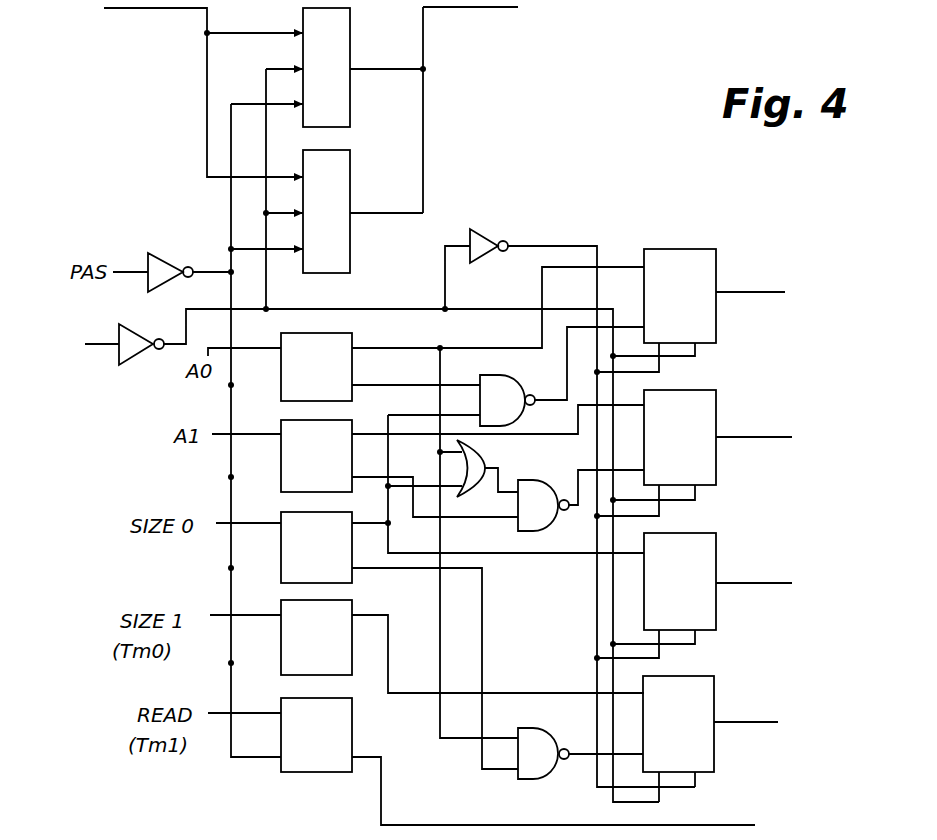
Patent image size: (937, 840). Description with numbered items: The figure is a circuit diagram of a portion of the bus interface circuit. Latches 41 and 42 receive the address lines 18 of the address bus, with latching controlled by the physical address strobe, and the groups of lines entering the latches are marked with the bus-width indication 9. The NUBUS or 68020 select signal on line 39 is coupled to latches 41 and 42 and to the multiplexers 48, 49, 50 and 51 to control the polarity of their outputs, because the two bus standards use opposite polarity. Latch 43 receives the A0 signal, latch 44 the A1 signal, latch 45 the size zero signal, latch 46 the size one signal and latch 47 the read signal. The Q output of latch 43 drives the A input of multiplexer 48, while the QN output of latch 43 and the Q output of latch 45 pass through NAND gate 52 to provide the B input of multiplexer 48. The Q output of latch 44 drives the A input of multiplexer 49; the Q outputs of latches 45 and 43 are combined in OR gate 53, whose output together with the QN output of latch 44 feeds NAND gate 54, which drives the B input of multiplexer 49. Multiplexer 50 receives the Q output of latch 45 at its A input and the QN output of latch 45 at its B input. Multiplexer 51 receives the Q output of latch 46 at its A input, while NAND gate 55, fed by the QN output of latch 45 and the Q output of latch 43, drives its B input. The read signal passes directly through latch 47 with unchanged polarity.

The address bus lines 18 is at (488, 0).
The bus lines 9 is at (255, 165).
The latch 41 is at (350, 40).
The latch 42 is at (350, 190).
The NUBUS or 68020 select signal line 39 is at (106, 347).
The latch 43 is at (352, 342).
The latch 44 is at (352, 420).
The latch 45 is at (345, 512).
The latch 46 is at (352, 605).
The latch 47 is at (340, 697).
The multiplexer 48 is at (716, 330).
The multiplexer 49 is at (716, 413).
The multiplexer 50 is at (710, 551).
The multiplexer 51 is at (714, 695).
The NAND gate 52 is at (512, 386).
The OR gate 53 is at (483, 457).
The NAND gate 54 is at (536, 483).
The NAND gate 55 is at (537, 742).